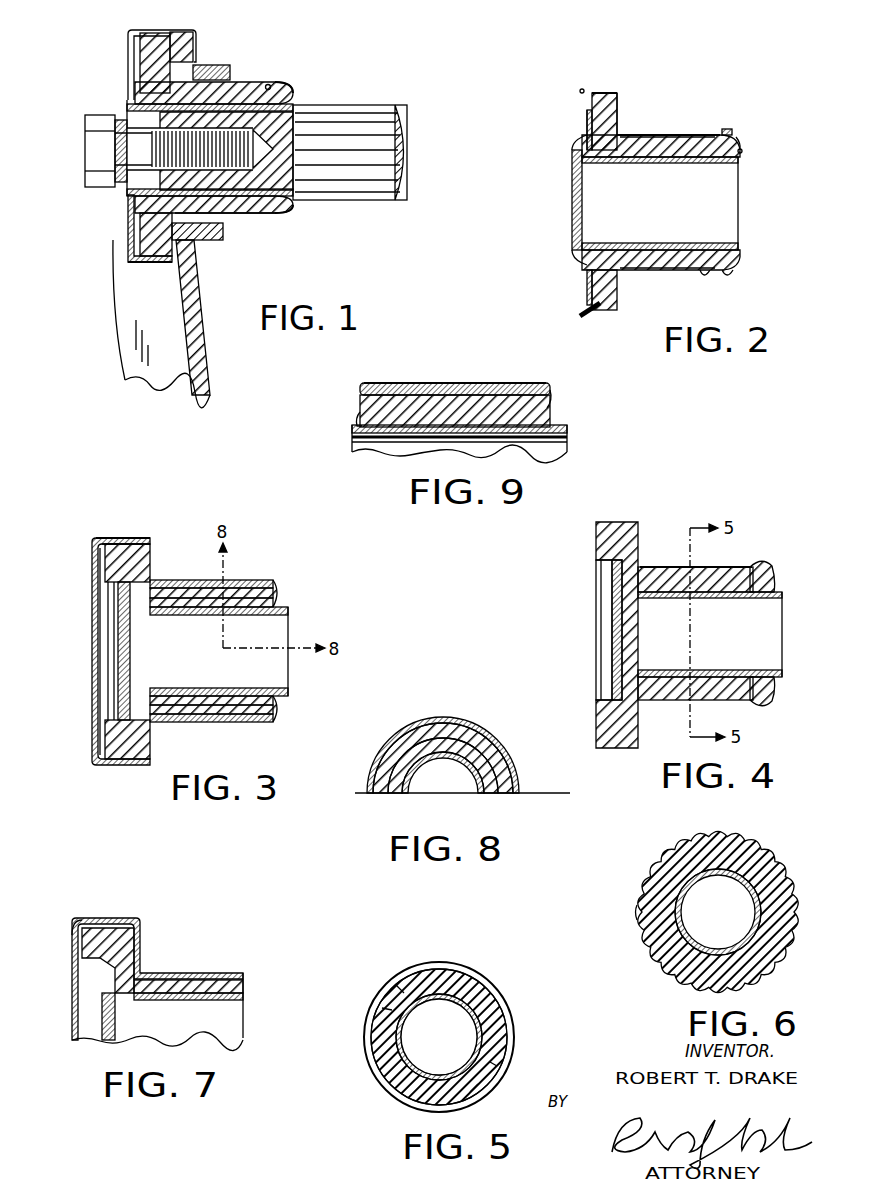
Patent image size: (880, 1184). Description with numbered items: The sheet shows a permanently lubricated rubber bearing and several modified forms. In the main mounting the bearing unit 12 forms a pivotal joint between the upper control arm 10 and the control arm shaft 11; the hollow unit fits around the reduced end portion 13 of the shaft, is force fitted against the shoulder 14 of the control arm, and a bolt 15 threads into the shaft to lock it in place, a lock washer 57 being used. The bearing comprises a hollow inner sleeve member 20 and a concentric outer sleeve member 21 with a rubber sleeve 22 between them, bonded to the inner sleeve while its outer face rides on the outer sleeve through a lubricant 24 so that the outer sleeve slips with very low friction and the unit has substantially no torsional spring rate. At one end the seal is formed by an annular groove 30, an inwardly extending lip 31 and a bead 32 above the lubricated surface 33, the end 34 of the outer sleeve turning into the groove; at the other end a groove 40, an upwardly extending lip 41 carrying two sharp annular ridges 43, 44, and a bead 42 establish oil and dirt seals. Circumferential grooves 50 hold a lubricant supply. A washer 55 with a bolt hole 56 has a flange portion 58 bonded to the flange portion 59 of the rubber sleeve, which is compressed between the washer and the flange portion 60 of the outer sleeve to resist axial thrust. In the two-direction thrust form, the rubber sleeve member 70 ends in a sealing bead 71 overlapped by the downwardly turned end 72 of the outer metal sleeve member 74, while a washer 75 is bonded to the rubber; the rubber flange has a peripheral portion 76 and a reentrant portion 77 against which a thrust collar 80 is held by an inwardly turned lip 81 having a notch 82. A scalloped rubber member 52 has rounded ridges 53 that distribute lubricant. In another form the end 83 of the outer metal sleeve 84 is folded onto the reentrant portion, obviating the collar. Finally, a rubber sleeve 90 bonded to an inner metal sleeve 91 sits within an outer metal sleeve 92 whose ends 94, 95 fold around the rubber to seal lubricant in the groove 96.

In FIG. 1, the upper control arm 10 is at (117, 240).
In FIG. 1, the control arm shaft 11 is at (406, 193).
In FIG. 1, the bearing unit 12 is at (81, 82).
In FIG. 1, the reduced end portion 13 is at (287, 127).
In FIG. 1, the shoulder 14 is at (173, 32).
In FIG. 1, the bolt 15 is at (92, 157).
In FIG. 1, the inner sleeve member 20 is at (327, 198).
In FIG. 2, the inner sleeve member 20 is at (730, 165).
In FIG. 3, the inner sleeve member 20 is at (278, 612).
In FIG. 4, the inner sleeve member 20 is at (770, 598).
In FIG. 8, the inner sleeve member 20 is at (474, 781).
In FIG. 5, the inner sleeve member 20 is at (401, 1020).
In FIG. 1, the outer sleeve member 21 is at (268, 84).
In FIG. 1, the rubber sleeve 22 is at (223, 85).
In FIG. 2, the rubber sleeve 22 is at (681, 145).
In FIG. 5, the rubber sleeve 22 is at (503, 1012).
In FIG. 1, the lubricant 24 is at (245, 224).
In FIG. 3, the lubricant 24 is at (181, 581).
In FIG. 8, the lubricant 24 is at (451, 719).
In FIG. 2, the annular groove 30 is at (738, 140).
In FIG. 1, the lip 31 is at (288, 215).
In FIG. 2, the lip 31 is at (743, 147).
In FIG. 2, the bead 32 is at (723, 134).
In FIG. 5, the bead 32 is at (471, 978).
In FIG. 2, the lubricated surface 33 is at (629, 135).
In FIG. 1, the end of outer metal sleeve 34 is at (290, 88).
In FIG. 2, the groove 40 is at (607, 94).
In FIG. 1, the upwardly extending lip 41 is at (144, 265).
In FIG. 2, the upwardly extending lip 41 is at (586, 95).
In FIG. 1, the bead 42 is at (170, 268).
In FIG. 2, the bead 42 is at (617, 100).
In FIG. 2, the annular ridge 43 is at (582, 89).
In FIG. 2, the annular ridge 44 is at (601, 93).
In FIG. 1, the grooves 50 is at (232, 224).
In FIG. 2, the grooves 50 is at (656, 137).
In FIG. 4, the grooves 50 is at (660, 571).
In FIG. 5, the grooves 50 is at (405, 986).
In FIG. 6, the rubber member 52 is at (642, 930).
In FIG. 6, the ridges 53 is at (662, 853).
In FIG. 1, the washer 55 is at (130, 207).
In FIG. 2, the washer 55 is at (574, 250).
In FIG. 2, the bolt hole 56 is at (574, 215).
In FIG. 1, the lock washer 57 is at (120, 190).
In FIG. 2, the flange portion 58 is at (587, 126).
In FIG. 2, the flange portion of rubber sleeve 59 is at (617, 284).
In FIG. 1, the flange portion 60 is at (194, 53).
In FIG. 3, the rubber sleeve member 70 is at (150, 572).
In FIG. 4, the rubber sleeve member 70 is at (652, 690).
In FIG. 8, the rubber sleeve member 70 is at (501, 749).
In FIG. 4, the sealing bead 71 is at (770, 703).
In FIG. 3, the downwardly turned end 72 is at (278, 591).
In FIG. 3, the outer metal sleeve member 74 is at (179, 511).
In FIG. 8, the outer metal sleeve member 74 is at (481, 731).
In FIG. 3, the washer 75 is at (120, 620).
In FIG. 4, the washer 75 is at (614, 605).
In FIG. 3, the peripheral portion 76 is at (120, 541).
In FIG. 3, the reentrant portion 77 is at (104, 566).
In FIG. 7, the reentrant portion 77 is at (100, 962).
In FIG. 3, the thrust collar 80 is at (112, 579).
In FIG. 3, the inwardly turned lip 81 is at (98, 551).
In FIG. 3, the notch 82 is at (95, 540).
In FIG. 7, the end of outer metal sleeve 83 is at (74, 932).
In FIG. 7, the outer metal sleeve 84 is at (138, 926).
In FIG. 9, the rubber sleeve 90 is at (432, 392).
In FIG. 9, the inner metal sleeve 91 is at (562, 432).
In FIG. 9, the outer metal sleeve 92 is at (486, 386).
In FIG. 9, the sleeve end 94 is at (358, 408).
In FIG. 9, the sleeve end 95 is at (548, 404).
In FIG. 9, the groove 96 is at (400, 387).